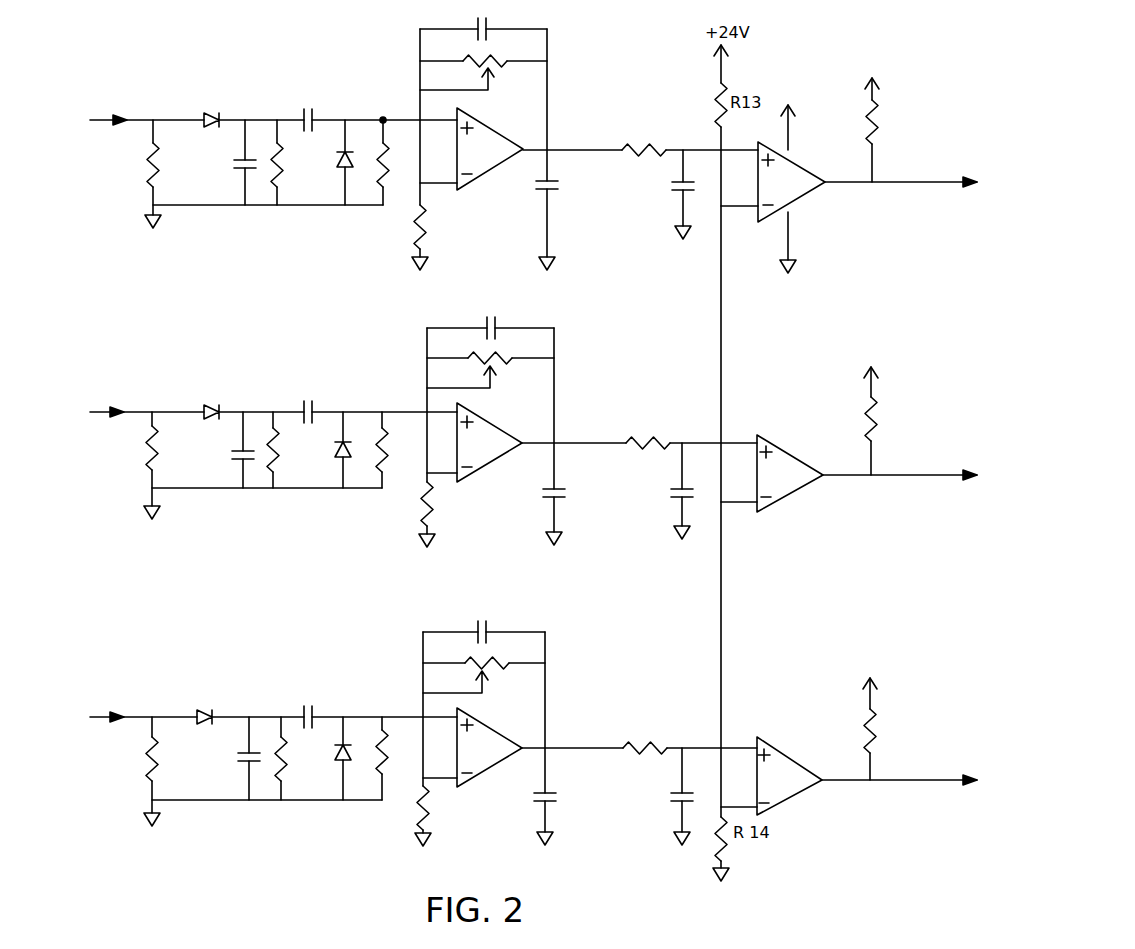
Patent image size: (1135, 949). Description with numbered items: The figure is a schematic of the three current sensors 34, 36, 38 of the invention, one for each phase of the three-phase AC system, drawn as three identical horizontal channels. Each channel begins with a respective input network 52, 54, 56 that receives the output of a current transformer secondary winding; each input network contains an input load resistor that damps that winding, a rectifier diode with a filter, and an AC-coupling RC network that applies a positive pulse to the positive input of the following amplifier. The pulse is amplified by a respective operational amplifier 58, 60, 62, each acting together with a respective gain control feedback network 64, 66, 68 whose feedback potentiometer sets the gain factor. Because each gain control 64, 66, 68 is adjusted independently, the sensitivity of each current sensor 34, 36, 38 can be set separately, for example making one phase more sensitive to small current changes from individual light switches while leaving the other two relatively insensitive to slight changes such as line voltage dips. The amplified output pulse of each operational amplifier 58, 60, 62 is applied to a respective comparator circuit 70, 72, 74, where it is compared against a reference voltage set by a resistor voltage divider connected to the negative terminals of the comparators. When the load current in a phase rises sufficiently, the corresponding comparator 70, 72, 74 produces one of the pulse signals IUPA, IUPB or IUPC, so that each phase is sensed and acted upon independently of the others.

The current sensor 34 is at (517, 139).
The current sensor 36 is at (522, 417).
The current sensor 38 is at (520, 717).
The input network 52 is at (273, 174).
The input network 54 is at (273, 462).
The input network 56 is at (273, 767).
The operational amplifier 58 is at (487, 171).
The operational amplifier 60 is at (487, 458).
The operational amplifier 62 is at (485, 756).
The gain control circuit 64 is at (515, 47).
The gain control circuit 66 is at (519, 346).
The gain control circuit 68 is at (513, 650).
The comparator circuit 70 is at (792, 181).
The comparator circuit 72 is at (782, 478).
The comparator circuit 74 is at (785, 781).